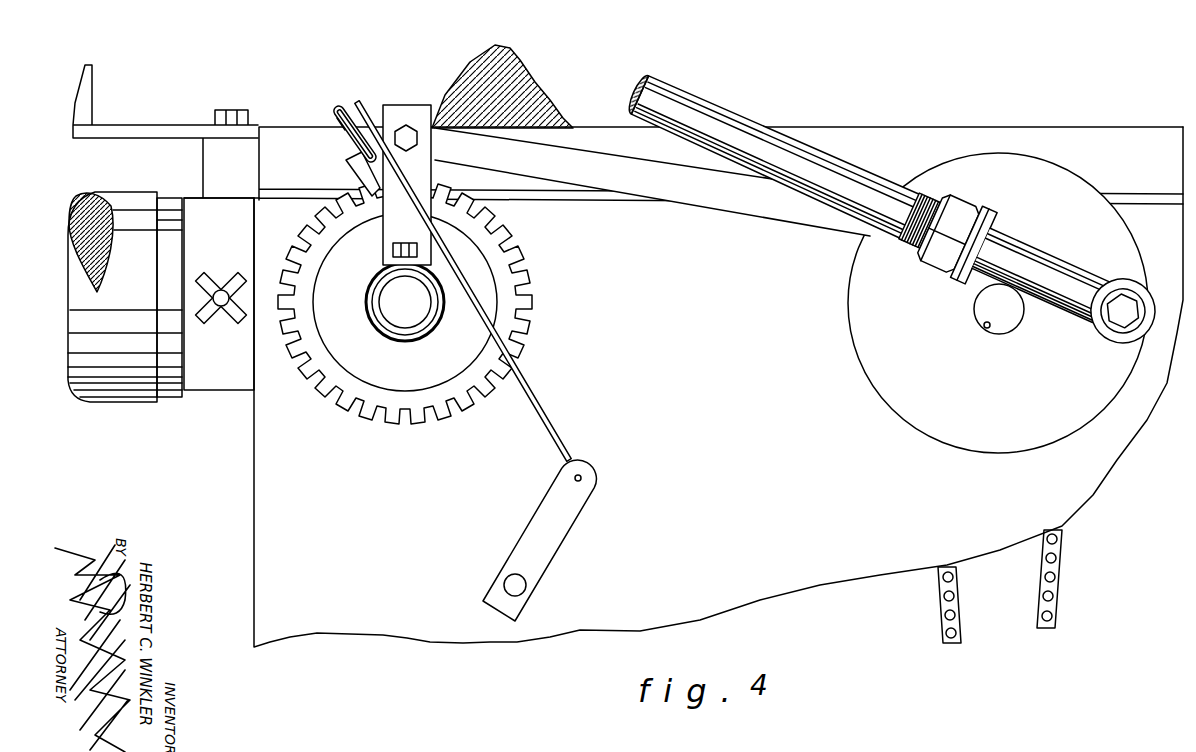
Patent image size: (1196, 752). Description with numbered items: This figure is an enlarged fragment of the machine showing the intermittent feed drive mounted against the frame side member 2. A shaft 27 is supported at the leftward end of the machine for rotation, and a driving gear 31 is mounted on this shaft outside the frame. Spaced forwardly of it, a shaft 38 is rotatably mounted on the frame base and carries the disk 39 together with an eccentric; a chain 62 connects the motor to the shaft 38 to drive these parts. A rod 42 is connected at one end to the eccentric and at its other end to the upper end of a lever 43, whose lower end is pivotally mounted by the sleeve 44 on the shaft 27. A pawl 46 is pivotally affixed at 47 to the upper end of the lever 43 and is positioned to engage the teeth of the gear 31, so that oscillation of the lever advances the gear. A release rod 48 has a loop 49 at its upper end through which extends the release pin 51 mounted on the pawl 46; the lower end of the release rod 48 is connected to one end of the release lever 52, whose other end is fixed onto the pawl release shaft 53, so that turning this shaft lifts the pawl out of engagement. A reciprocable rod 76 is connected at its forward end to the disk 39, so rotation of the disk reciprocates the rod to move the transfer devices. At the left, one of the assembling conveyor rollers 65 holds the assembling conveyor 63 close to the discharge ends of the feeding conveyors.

The side member 2 is at (732, 430).
The shaft 27 is at (409, 312).
The driving gear 31 is at (527, 261).
The shaft 38 is at (1003, 313).
The disk 39 is at (970, 420).
The rod 42 is at (680, 193).
The lever 43 is at (400, 113).
The sleeve 44 is at (375, 285).
The pawl 46 is at (345, 164).
The pivot 47 is at (412, 141).
The release rod 48 is at (540, 406).
The loop 49 is at (338, 121).
The release pin 51 is at (358, 130).
The release lever 52 is at (562, 508).
The pawl release shaft 53 is at (518, 585).
The chain 62 is at (1054, 572).
The assembling conveyor 63 is at (130, 388).
The assembling conveyor roller 65 is at (173, 390).
The reciprocable rod 76 is at (778, 148).